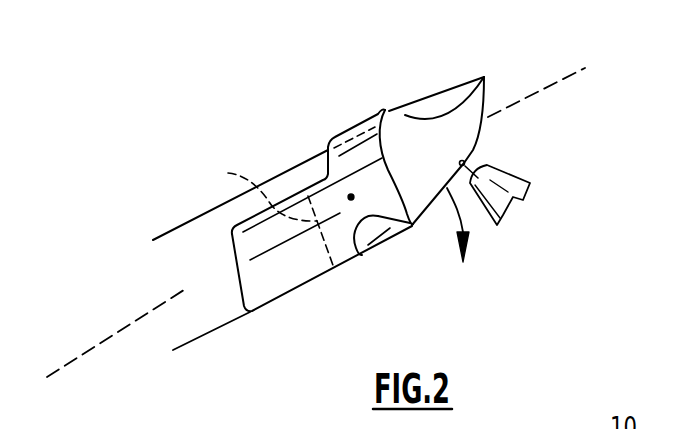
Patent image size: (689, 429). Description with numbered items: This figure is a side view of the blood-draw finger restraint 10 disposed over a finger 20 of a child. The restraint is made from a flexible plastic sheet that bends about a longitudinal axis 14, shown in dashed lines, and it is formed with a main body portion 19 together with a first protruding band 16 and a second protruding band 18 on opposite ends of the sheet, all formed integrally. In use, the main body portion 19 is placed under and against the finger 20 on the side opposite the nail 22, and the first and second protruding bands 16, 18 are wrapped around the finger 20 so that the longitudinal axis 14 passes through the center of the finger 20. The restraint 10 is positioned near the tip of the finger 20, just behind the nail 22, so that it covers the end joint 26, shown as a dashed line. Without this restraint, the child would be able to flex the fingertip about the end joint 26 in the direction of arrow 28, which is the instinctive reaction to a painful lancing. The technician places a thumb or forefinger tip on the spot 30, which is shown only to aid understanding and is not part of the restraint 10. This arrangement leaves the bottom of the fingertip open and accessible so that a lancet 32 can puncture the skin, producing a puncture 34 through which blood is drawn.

The blood-draw finger restraint 10 is at (352, 82).
The longitudinal axis 14 is at (520, 101).
The first protruding band 16 is at (377, 246).
The second protruding band 18 is at (384, 108).
The main body portion 19 is at (278, 262).
The finger 20 is at (198, 310).
The nail 22 is at (484, 78).
The end joint 26 is at (240, 195).
The arrow 28 is at (468, 231).
The spot 30 is at (348, 197).
The lancet 32 is at (532, 179).
The puncture 34 is at (466, 162).